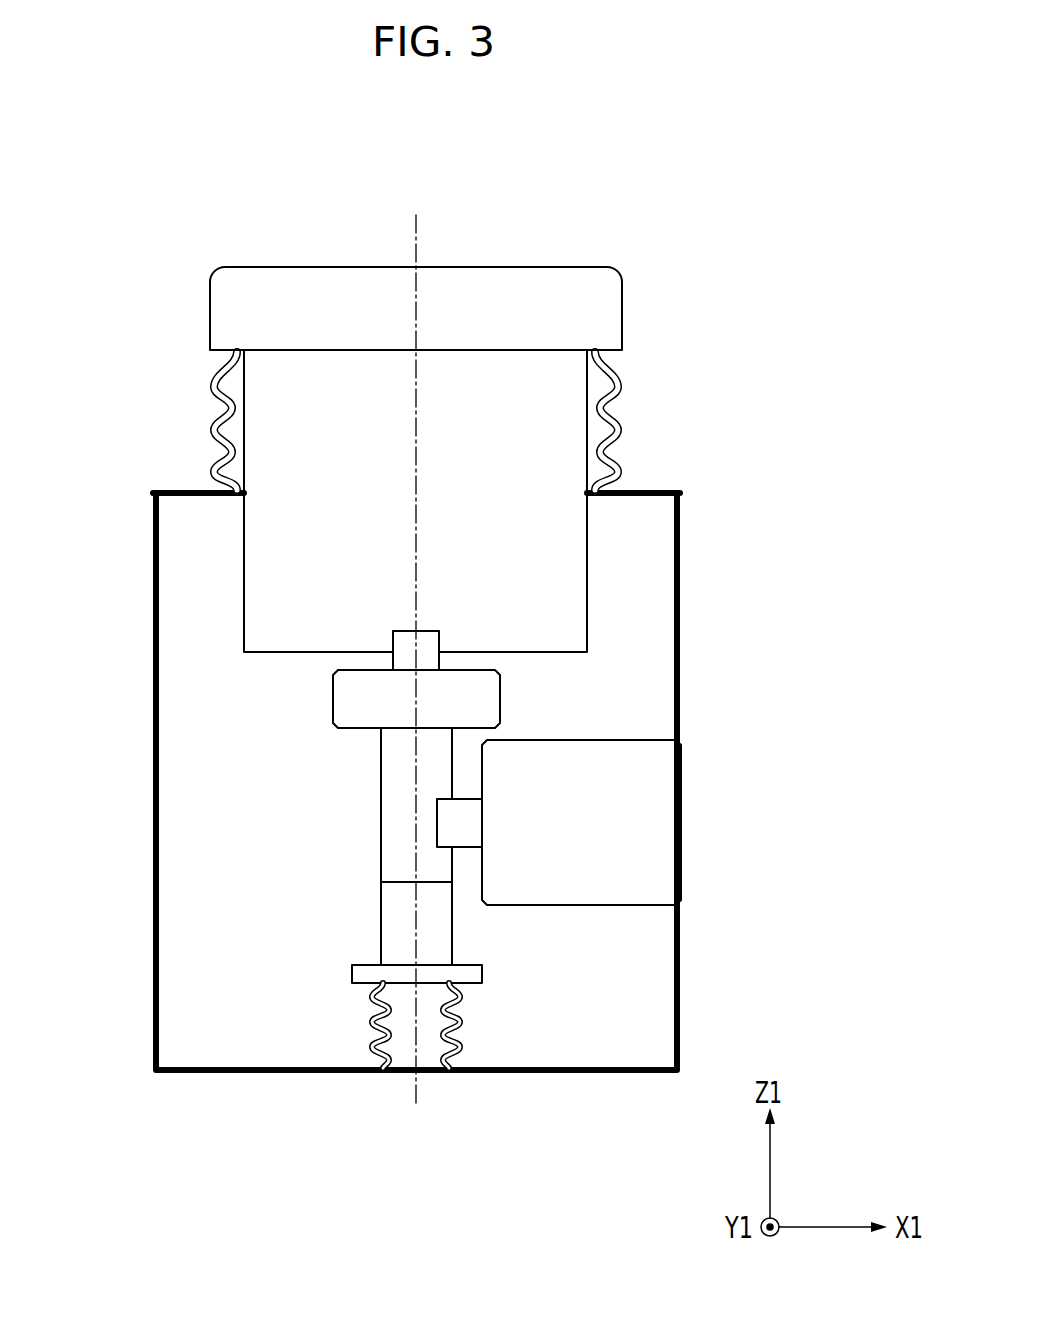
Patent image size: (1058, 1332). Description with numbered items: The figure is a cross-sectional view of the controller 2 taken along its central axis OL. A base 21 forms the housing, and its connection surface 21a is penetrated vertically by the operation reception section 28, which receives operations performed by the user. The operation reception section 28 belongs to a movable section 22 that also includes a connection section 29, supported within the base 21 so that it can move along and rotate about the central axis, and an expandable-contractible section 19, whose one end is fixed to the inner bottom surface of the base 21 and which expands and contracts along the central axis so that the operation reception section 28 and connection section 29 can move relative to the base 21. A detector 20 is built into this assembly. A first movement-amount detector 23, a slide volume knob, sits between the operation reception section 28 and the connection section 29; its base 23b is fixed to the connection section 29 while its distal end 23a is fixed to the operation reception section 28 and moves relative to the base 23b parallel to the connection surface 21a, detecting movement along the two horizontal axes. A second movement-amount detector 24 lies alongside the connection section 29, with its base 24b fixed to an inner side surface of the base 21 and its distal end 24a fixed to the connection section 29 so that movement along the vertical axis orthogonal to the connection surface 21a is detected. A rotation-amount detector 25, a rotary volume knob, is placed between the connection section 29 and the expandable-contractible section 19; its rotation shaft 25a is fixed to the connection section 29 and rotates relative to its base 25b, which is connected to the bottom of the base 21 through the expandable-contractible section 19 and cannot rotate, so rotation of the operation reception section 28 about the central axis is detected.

The controller 2 is at (800, 186).
The expandable-contractible section 19 is at (367, 1020).
The detector 20 is at (354, 916).
The base 21 is at (680, 667).
The connection surface 21a is at (652, 490).
The movable section 22 is at (531, 205).
The first movement-amount detector 23 is at (97, 653).
The distal end 23a is at (393, 636).
The base 23b is at (333, 702).
The second movement-amount detector 24 is at (632, 1118).
The distal end 24a is at (470, 850).
The base 24b is at (625, 905).
The Z1-axis rotation-amount detector 25 is at (270, 925).
The rotation shaft 25a is at (381, 948).
The base 25b is at (352, 973).
The operation reception section 28 is at (558, 267).
The connection section 29 is at (381, 815).